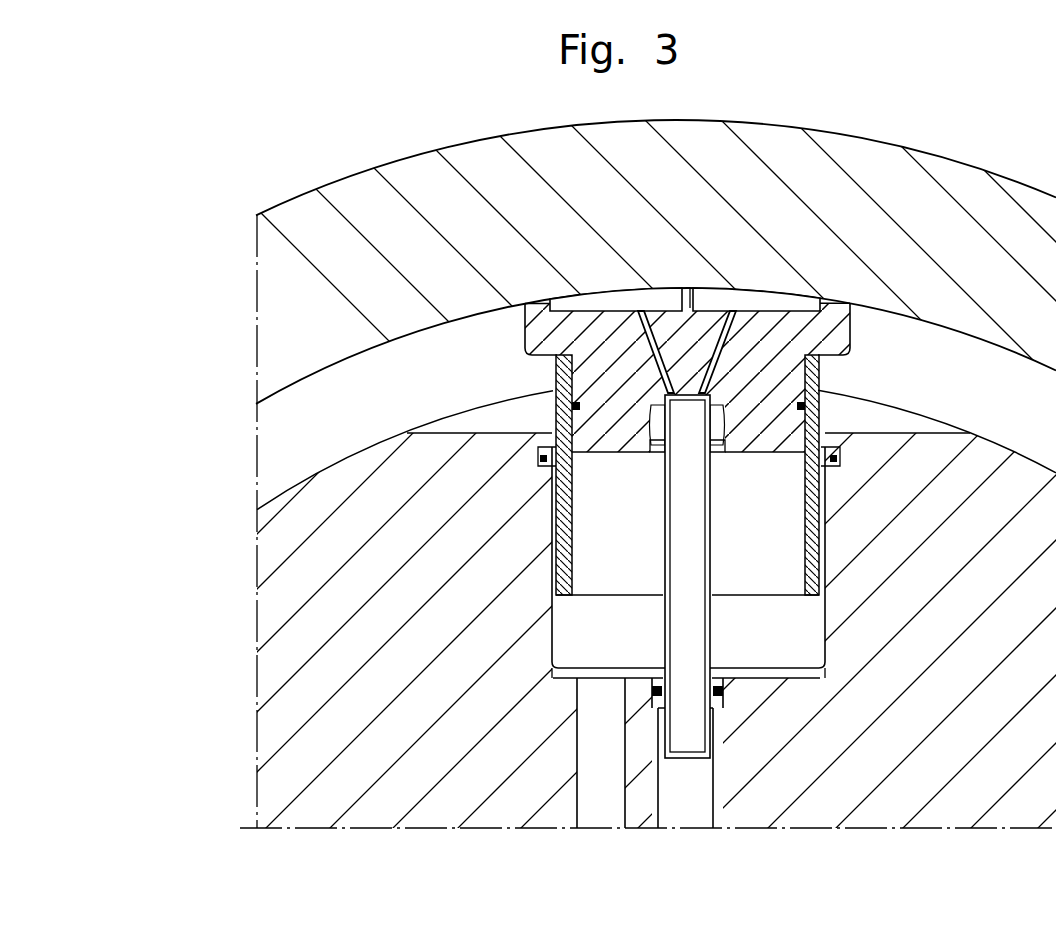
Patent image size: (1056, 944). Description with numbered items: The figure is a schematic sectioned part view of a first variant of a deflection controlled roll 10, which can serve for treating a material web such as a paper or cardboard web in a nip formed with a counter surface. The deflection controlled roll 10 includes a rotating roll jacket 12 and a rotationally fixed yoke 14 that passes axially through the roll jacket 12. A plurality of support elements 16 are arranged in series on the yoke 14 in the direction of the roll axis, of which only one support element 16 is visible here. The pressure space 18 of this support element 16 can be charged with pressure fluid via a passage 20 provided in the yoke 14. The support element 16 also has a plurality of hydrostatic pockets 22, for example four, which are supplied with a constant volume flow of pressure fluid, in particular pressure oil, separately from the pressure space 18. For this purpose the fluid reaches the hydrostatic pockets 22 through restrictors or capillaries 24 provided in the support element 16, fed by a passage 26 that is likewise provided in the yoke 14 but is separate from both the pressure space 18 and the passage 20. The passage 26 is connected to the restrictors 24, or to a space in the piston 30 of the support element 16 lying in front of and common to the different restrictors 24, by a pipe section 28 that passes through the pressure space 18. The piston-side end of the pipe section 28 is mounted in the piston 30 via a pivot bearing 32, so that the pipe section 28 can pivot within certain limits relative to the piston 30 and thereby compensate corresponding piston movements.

The deflection controlled roll 10 is at (879, 120).
The roll jacket 12 is at (968, 193).
The yoke 14 is at (285, 603).
The support element 16 is at (851, 334).
The pressure space 18 is at (790, 535).
The passage 20 is at (600, 805).
The hydrostatic pockets 22 is at (598, 300).
The restrictors 24 is at (655, 346).
The passage 26 is at (694, 805).
The pipe section 28 is at (714, 630).
The piston 30 is at (815, 375).
The pivot bearing 32 is at (650, 446).